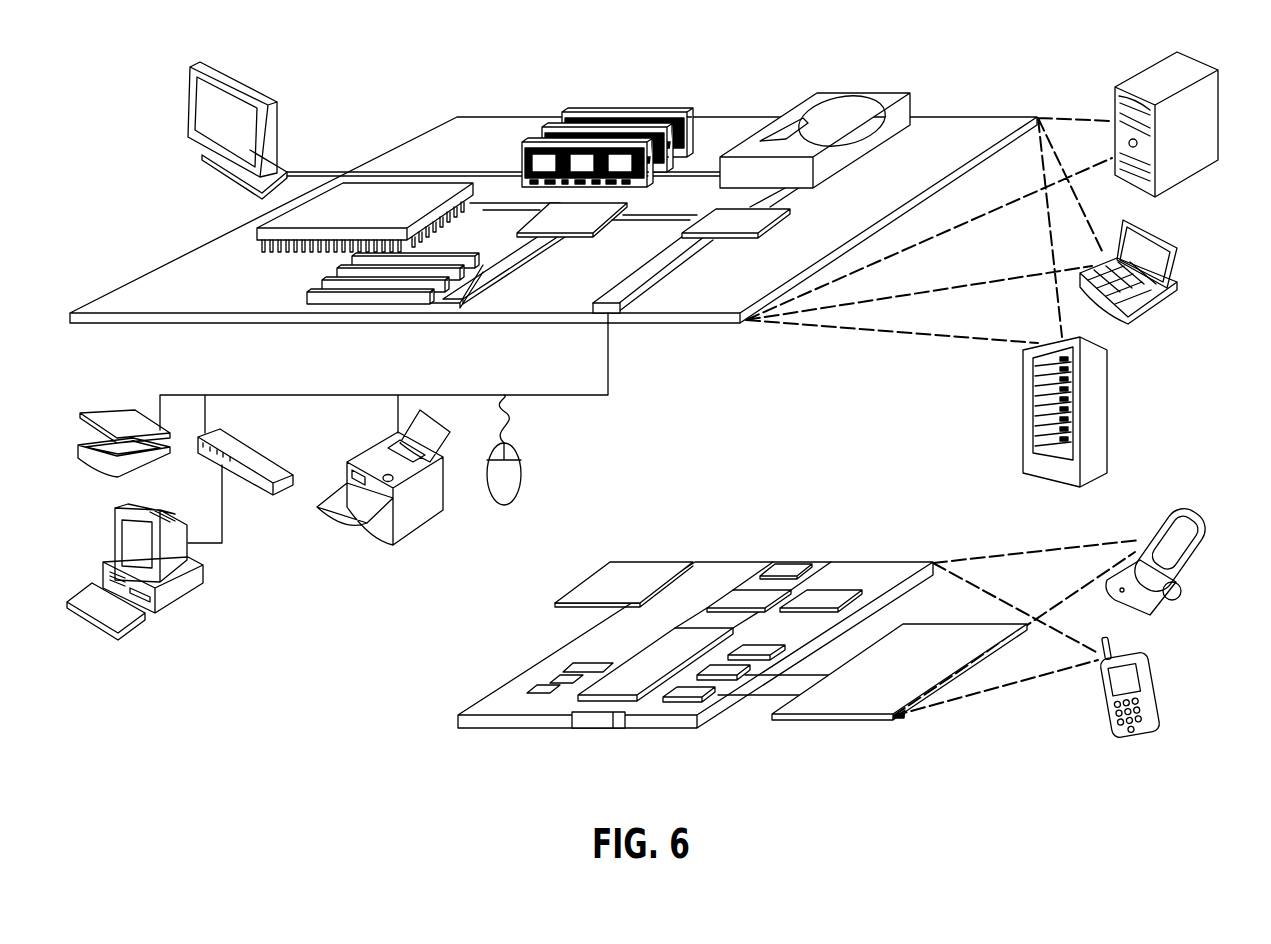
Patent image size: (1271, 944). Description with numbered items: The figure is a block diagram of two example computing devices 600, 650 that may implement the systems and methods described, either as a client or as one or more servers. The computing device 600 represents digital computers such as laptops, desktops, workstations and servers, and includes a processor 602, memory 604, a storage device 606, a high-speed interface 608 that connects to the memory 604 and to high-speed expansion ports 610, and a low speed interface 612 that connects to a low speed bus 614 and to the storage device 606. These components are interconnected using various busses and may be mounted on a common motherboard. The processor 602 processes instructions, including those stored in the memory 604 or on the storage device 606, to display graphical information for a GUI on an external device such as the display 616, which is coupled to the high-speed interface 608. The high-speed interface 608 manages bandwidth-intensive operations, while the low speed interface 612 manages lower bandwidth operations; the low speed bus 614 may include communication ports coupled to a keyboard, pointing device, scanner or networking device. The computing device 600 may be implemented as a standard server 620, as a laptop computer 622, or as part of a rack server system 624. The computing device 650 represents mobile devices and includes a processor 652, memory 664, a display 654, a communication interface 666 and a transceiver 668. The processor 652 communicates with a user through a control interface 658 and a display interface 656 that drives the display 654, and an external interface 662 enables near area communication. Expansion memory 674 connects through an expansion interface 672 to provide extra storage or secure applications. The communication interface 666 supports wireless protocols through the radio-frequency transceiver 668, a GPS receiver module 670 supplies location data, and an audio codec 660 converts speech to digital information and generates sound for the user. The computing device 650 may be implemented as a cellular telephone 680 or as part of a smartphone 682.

The computing device 600 is at (380, 90).
The processor 602 is at (257, 230).
The memory 604 is at (575, 112).
The storage device 606 is at (800, 96).
The high-speed interface 608 is at (550, 215).
The high-speed expansion ports 610 is at (322, 290).
The low speed interface 612 is at (720, 215).
The low speed bus 614 is at (612, 312).
The display 616 is at (190, 66).
The standard server 620 is at (1115, 103).
The laptop computer 622 is at (1187, 240).
The rack server system 624 is at (1023, 435).
The computing device 650 is at (440, 728).
The processor 652 is at (628, 688).
The display 654 is at (858, 700).
The display interface 656 is at (700, 692).
The control interface 658 is at (758, 680).
The audio codec 660 is at (752, 655).
The external interface 662 is at (596, 718).
The memory 664 is at (550, 678).
The communication interface 666 is at (747, 600).
The transceiver 668 is at (822, 600).
The GPS receiver module 670 is at (792, 572).
The expansion interface 672 is at (680, 577).
The expansion memory 674 is at (598, 602).
The cellular telephone 680 is at (1163, 530).
The smartphone 682 is at (1103, 693).